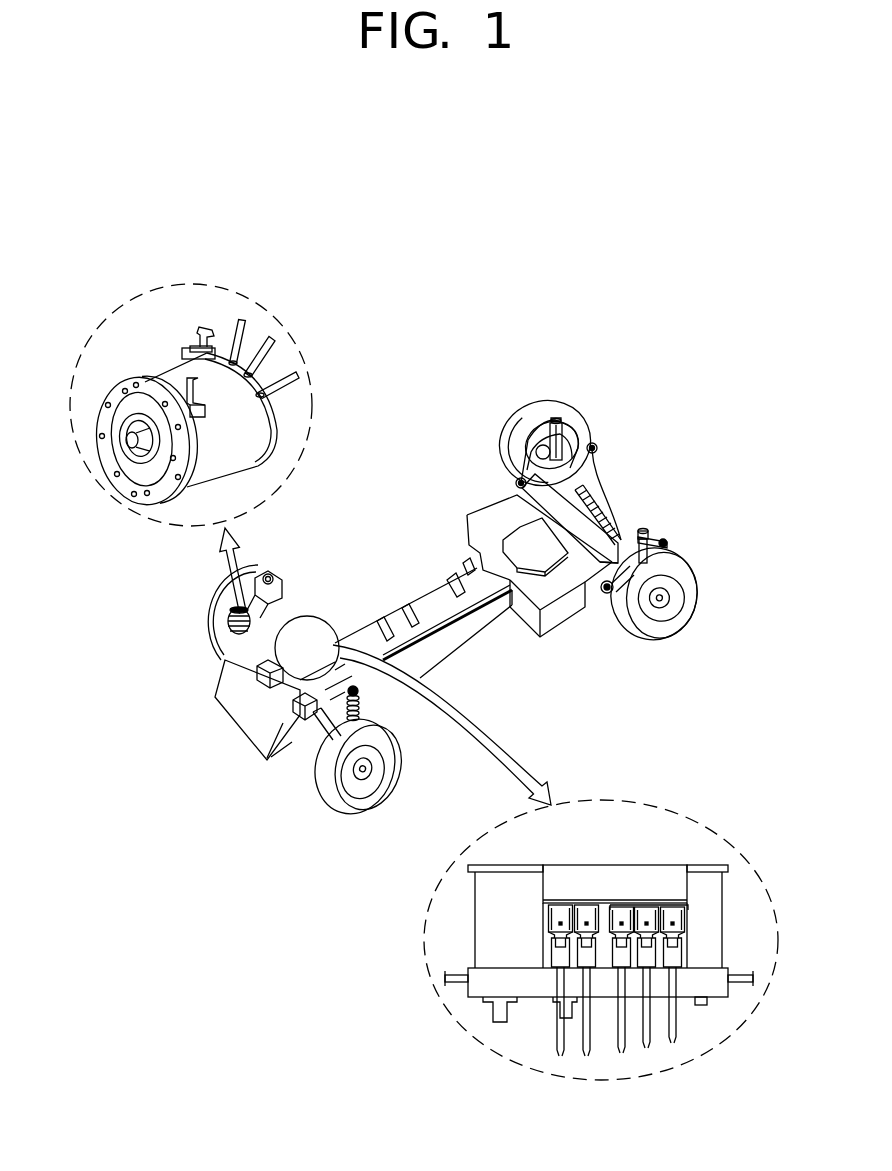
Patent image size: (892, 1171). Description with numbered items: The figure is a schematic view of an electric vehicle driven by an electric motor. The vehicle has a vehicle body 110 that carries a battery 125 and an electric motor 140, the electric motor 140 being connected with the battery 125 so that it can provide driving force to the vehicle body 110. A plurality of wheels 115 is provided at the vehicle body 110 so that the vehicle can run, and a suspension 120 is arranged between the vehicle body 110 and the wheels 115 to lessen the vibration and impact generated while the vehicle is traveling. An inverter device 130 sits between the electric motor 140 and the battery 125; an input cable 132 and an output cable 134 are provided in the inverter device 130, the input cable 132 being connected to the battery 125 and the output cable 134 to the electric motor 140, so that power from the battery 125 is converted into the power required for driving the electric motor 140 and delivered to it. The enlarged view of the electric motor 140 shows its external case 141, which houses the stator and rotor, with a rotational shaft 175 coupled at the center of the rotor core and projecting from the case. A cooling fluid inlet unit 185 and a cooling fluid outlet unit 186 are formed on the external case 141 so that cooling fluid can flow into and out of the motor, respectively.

The vehicle body 110 is at (612, 487).
The wheels 115 is at (542, 410).
The suspension 120 is at (658, 527).
The battery 125 is at (478, 503).
The inverter device 130 is at (303, 653).
The input cable 132 is at (588, 1052).
The output cable 134 is at (673, 1040).
The electric motor 140 is at (95, 314).
The external case 141 is at (178, 372).
The rotational shaft 175 is at (130, 442).
The cooling fluid inlet unit 185 is at (200, 392).
The cooling fluid outlet unit 186 is at (205, 328).